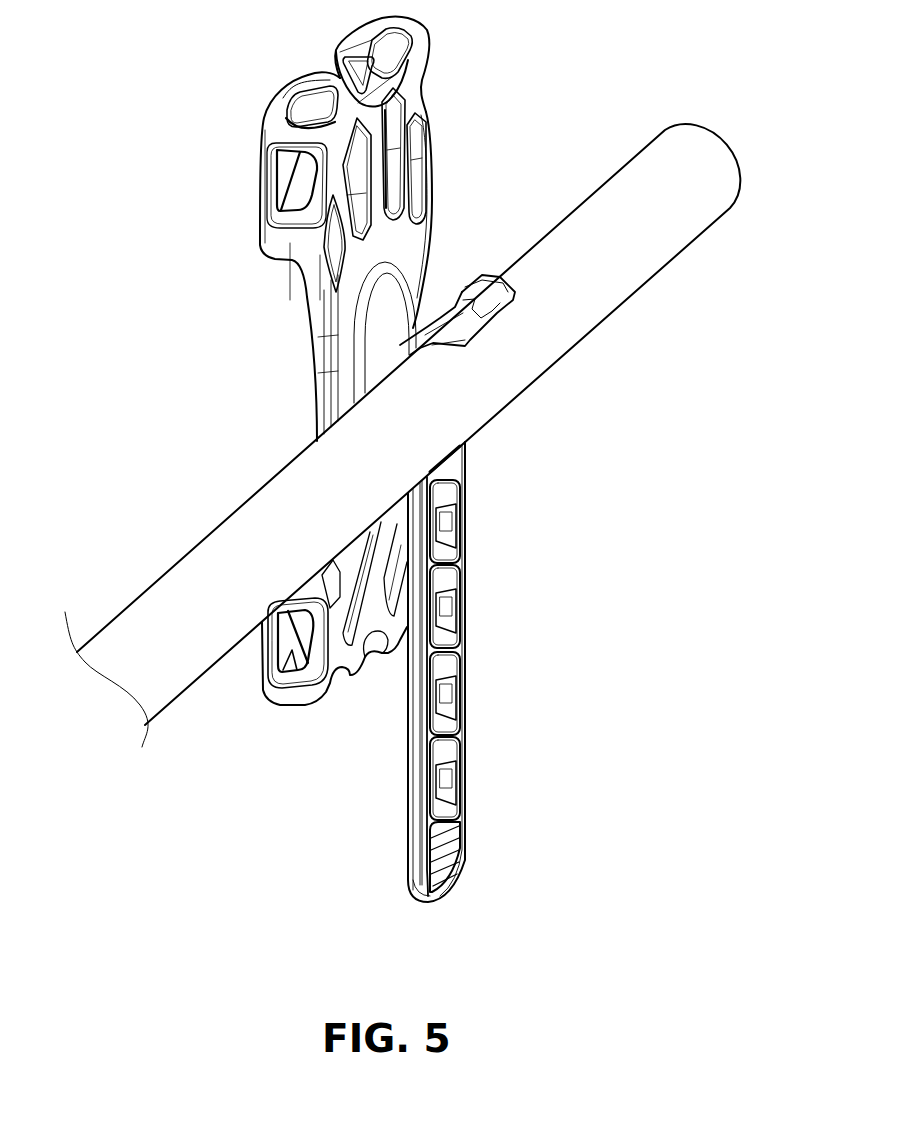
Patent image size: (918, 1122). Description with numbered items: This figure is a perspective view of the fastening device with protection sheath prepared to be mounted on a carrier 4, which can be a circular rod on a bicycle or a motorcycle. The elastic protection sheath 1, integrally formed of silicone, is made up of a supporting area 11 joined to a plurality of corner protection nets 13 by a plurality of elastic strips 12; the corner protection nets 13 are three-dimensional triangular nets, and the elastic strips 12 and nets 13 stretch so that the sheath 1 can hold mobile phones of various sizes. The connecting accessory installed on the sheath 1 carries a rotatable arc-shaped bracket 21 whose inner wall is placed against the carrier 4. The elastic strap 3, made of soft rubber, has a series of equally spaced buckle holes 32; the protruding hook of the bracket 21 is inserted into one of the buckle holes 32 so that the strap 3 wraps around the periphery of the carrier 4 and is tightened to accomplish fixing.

The elastic protection sheath 1 is at (93, 226).
The supporting area 11 is at (317, 393).
The elastic strips 12 is at (343, 220).
The corner protection nets 13 is at (257, 190).
The bracket 21 is at (452, 313).
The strap 3 is at (451, 672).
The buckle holes 32 is at (447, 690).
The carrier 4 is at (607, 290).